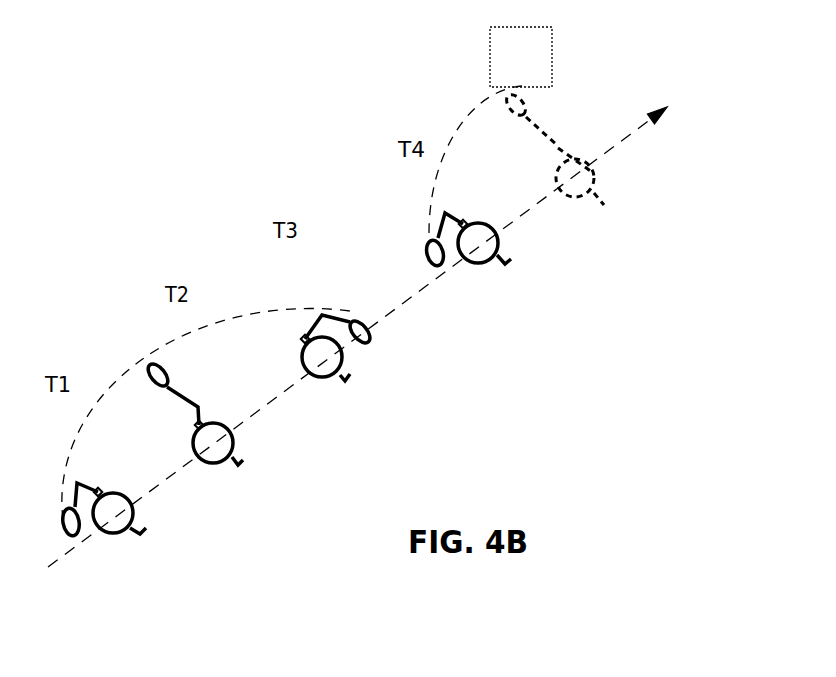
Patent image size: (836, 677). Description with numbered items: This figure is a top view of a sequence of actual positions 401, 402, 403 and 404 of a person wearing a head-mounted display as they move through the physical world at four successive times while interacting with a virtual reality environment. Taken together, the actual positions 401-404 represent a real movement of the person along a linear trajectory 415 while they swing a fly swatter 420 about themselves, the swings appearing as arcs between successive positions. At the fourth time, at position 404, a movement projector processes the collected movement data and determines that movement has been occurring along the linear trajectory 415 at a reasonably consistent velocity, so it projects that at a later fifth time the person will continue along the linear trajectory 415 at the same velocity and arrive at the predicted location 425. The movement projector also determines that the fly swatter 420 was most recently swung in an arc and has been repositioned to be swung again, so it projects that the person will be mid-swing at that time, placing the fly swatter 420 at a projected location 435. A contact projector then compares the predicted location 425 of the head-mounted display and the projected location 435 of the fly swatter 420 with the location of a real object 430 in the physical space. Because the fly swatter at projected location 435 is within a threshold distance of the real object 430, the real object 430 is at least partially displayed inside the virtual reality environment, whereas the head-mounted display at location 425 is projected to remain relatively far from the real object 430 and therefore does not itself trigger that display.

The actual position 401 is at (173, 590).
The actual position 402 is at (162, 412).
The actual position 403 is at (398, 421).
The actual position 404 is at (536, 312).
The linear trajectory 415 is at (622, 138).
The fly swatter 420 is at (147, 362).
The predicted location 425 is at (640, 264).
The real object 430 is at (490, 47).
The predicted location of the fly swatter 435 is at (578, 116).